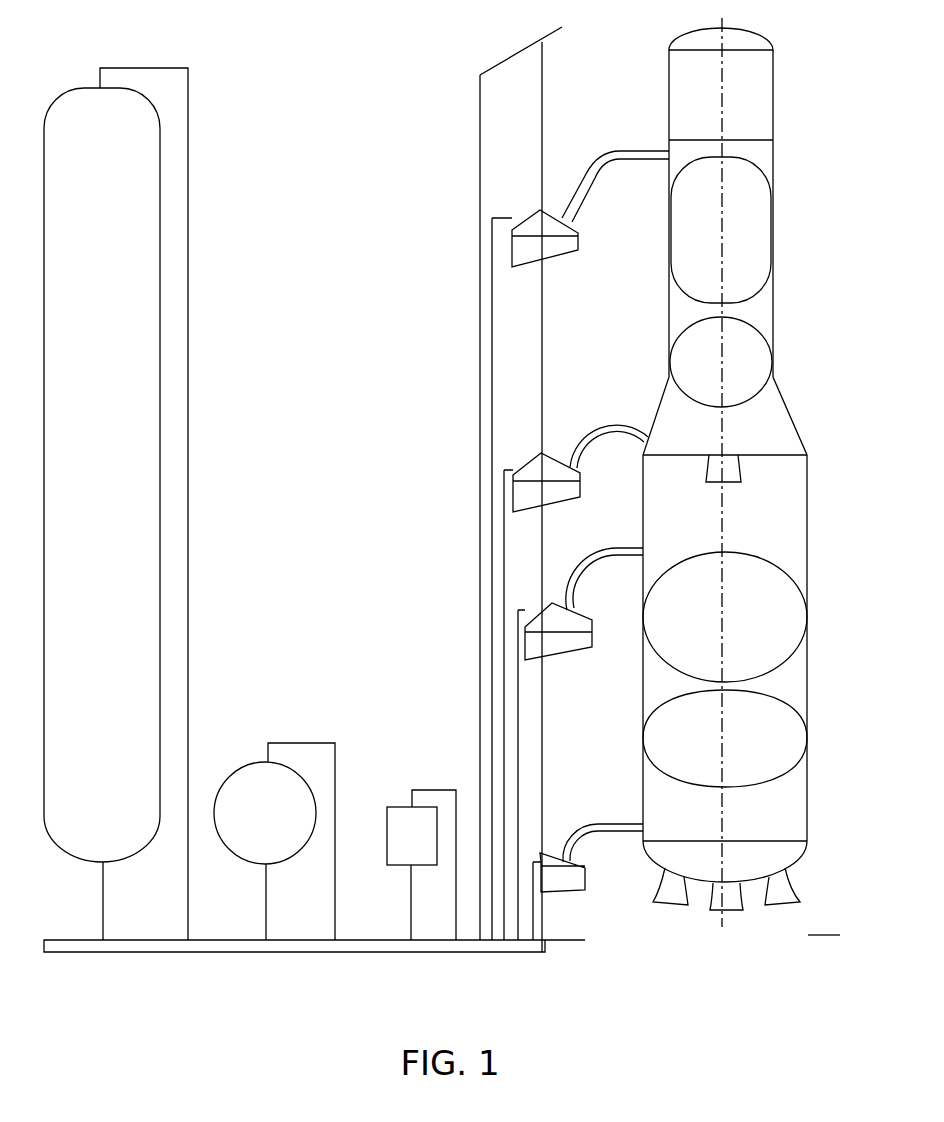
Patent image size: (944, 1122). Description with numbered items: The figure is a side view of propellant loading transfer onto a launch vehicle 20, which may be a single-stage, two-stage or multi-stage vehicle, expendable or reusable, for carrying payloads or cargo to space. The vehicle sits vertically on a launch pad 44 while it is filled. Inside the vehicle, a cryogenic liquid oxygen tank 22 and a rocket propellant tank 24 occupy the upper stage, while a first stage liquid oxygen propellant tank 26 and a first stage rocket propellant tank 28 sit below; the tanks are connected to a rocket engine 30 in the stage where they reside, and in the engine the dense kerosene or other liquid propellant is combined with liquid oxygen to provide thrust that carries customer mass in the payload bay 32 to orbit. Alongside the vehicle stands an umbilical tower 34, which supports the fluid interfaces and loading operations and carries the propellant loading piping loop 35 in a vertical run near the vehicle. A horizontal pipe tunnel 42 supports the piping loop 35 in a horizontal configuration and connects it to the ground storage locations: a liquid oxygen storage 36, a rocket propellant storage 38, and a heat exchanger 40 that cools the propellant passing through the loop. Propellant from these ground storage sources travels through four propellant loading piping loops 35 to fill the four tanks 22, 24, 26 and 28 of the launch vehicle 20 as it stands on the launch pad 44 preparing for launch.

The launch vehicle 20 is at (773, 157).
The liquid oxygen tank 22 is at (762, 226).
The rocket propellant tank 24 is at (765, 362).
The first stage liquid oxygen propellant tank 26 is at (792, 601).
The first stage rocket propellant tank 28 is at (790, 727).
The rocket engine 30 is at (730, 466).
The payload bay 32 is at (755, 78).
The umbilical tower 34 is at (503, 85).
The propellant loading piping loop 35 is at (188, 245).
The liquid oxygen storage 36 is at (88, 123).
The rocket propellant storage 38 is at (262, 777).
The heat exchanger 40 is at (400, 818).
The pipe tunnel 42 is at (220, 945).
The launch pad 44 is at (558, 942).